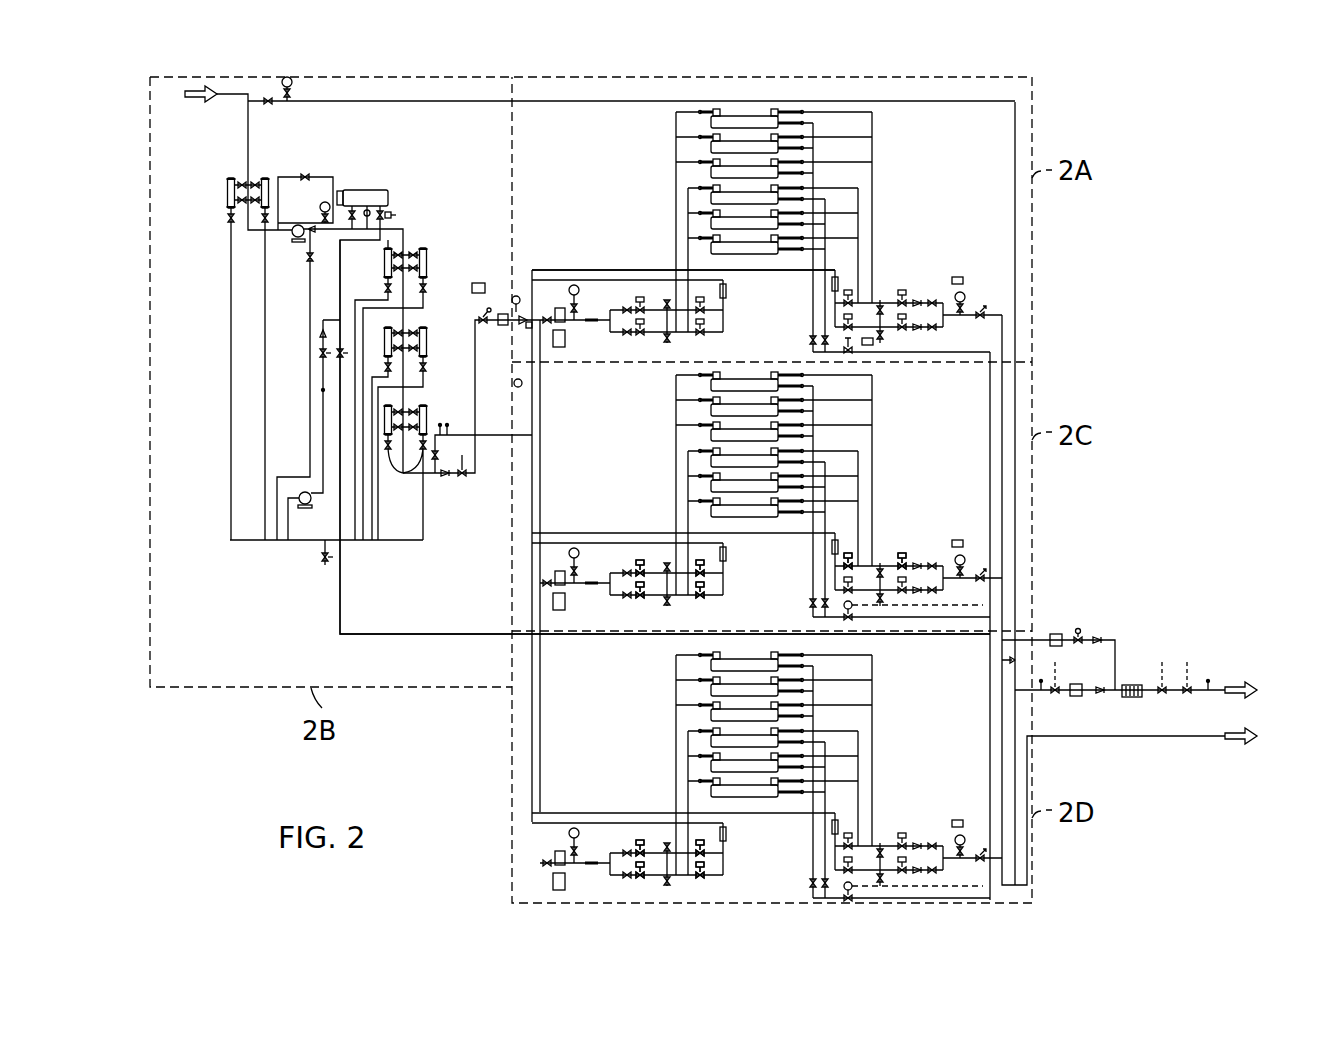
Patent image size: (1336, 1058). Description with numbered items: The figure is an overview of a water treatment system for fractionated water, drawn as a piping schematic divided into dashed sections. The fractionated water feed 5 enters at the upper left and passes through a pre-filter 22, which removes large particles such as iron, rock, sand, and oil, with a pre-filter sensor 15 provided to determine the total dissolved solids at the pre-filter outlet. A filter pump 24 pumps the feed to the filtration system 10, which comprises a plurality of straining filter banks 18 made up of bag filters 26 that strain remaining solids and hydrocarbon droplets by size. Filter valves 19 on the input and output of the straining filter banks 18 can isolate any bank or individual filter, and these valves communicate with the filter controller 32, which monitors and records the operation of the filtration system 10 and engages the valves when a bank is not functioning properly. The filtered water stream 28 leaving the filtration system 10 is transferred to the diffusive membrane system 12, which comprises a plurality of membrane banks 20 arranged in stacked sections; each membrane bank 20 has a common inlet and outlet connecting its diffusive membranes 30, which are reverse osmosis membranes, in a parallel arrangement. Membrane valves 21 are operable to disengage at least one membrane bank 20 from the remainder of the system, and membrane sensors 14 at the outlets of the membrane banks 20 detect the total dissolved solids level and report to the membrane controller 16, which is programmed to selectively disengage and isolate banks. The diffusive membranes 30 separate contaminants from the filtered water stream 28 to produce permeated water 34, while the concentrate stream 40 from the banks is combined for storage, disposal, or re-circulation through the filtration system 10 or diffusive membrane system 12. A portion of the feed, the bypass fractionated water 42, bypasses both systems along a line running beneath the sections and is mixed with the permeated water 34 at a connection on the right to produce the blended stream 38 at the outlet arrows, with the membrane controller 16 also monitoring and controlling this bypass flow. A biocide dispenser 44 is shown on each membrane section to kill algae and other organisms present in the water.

The fractionated water feed 5 is at (228, 99).
The filtration system 10 is at (600, 355).
The diffusive membrane system 12 is at (767, 507).
The membrane sensors 14 is at (847, 346).
The pre-filter sensor 15 is at (321, 204).
The membrane controller 16 is at (956, 276).
The straining filter banks 18 is at (428, 337).
The filter valves 19 is at (385, 289).
The membrane banks 20 is at (703, 407).
The membrane valves 21 is at (637, 562).
The pre-filter 22 is at (372, 188).
The filter pump 24 is at (301, 512).
The bag filters 26 is at (424, 246).
The filtered water stream 28 is at (500, 437).
The diffusive membranes 30 is at (712, 206).
The filter controller 32 is at (480, 282).
The permeated water 34 is at (1016, 707).
The blended stream 38 is at (1235, 686).
The concentrate stream 40 is at (588, 268).
The bypass fractionated water 42 is at (436, 634).
The biocide dispenser 44 is at (566, 340).